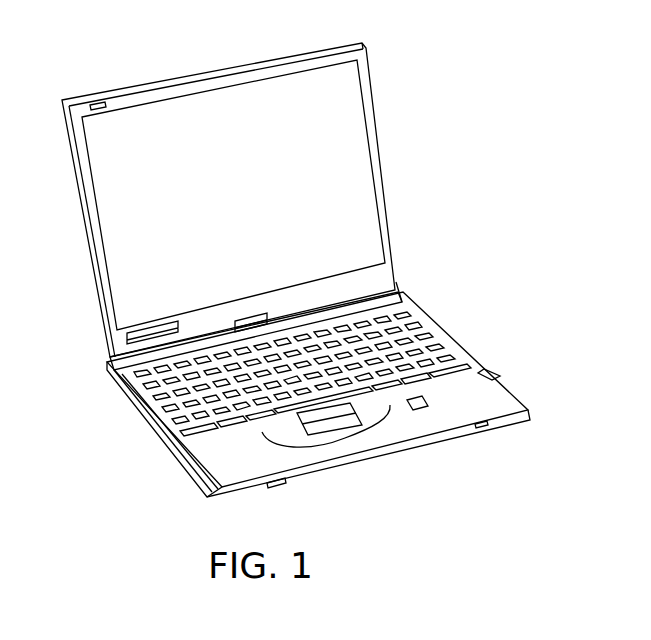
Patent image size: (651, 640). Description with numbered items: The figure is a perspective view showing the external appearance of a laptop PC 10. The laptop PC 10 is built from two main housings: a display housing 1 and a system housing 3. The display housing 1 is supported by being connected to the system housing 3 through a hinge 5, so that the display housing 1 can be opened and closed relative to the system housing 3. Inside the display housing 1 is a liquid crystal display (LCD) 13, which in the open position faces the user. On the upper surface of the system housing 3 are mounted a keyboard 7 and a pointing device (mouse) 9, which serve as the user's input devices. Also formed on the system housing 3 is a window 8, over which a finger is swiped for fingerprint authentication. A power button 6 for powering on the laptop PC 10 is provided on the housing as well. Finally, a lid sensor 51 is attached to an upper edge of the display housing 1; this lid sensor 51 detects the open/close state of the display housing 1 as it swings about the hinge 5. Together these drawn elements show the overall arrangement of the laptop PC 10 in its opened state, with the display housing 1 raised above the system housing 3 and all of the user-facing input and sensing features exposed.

The display housing 1 is at (372, 64).
The system housing 3 is at (457, 338).
The hinge 5 is at (395, 248).
The power button 6 is at (400, 290).
The keyboard 7 is at (155, 427).
The window 8 is at (427, 403).
The pointing device (mouse) 9 is at (357, 407).
The laptop PC 10 is at (492, 103).
The liquid crystal display (LCD) 13 is at (350, 128).
The lid sensor 51 is at (107, 105).